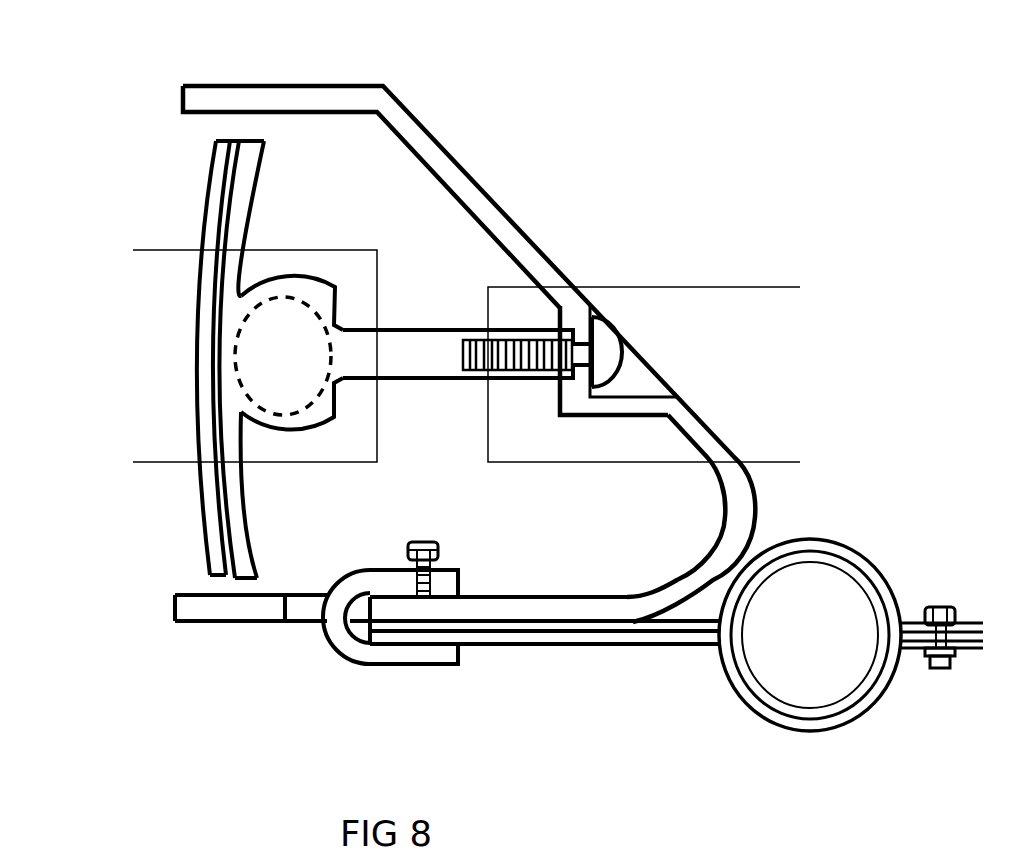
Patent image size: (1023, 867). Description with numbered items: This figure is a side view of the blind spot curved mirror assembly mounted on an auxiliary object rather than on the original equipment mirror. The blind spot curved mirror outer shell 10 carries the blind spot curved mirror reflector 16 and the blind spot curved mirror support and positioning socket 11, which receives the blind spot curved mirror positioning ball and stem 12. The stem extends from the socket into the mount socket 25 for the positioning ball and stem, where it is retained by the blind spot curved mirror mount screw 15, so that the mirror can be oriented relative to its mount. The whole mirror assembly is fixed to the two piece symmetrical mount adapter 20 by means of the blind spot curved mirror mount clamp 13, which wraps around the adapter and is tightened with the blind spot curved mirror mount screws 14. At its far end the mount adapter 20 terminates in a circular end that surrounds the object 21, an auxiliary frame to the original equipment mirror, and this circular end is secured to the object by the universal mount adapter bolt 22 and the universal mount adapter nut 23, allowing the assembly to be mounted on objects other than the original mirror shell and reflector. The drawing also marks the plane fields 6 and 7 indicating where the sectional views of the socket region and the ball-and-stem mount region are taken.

The section line 6- 6 is at (241, 354).
The section line 7-7 / housing 7 is at (656, 376).
The blind spot curved mirror outer shell 10 is at (505, 213).
The blind spot curved mirror support and positioning socket 11 is at (247, 488).
The blind spot curved mirror positioning ball and stem 12 is at (418, 381).
The blind spot curved mirror mount clamp 13 is at (330, 636).
The blind spot curved mirror mount screws 14 is at (421, 540).
The blind spot curved mirror mount screw 15 is at (632, 348).
The blind spot curved mirror reflector 16 is at (201, 488).
The two piece symmetrical mount adapter 20 is at (690, 633).
The object 21 is at (797, 722).
The universal mount adapter bolt 22 is at (943, 607).
The universal mount adapter nut 23 is at (957, 656).
The mount socket 25 is at (558, 392).